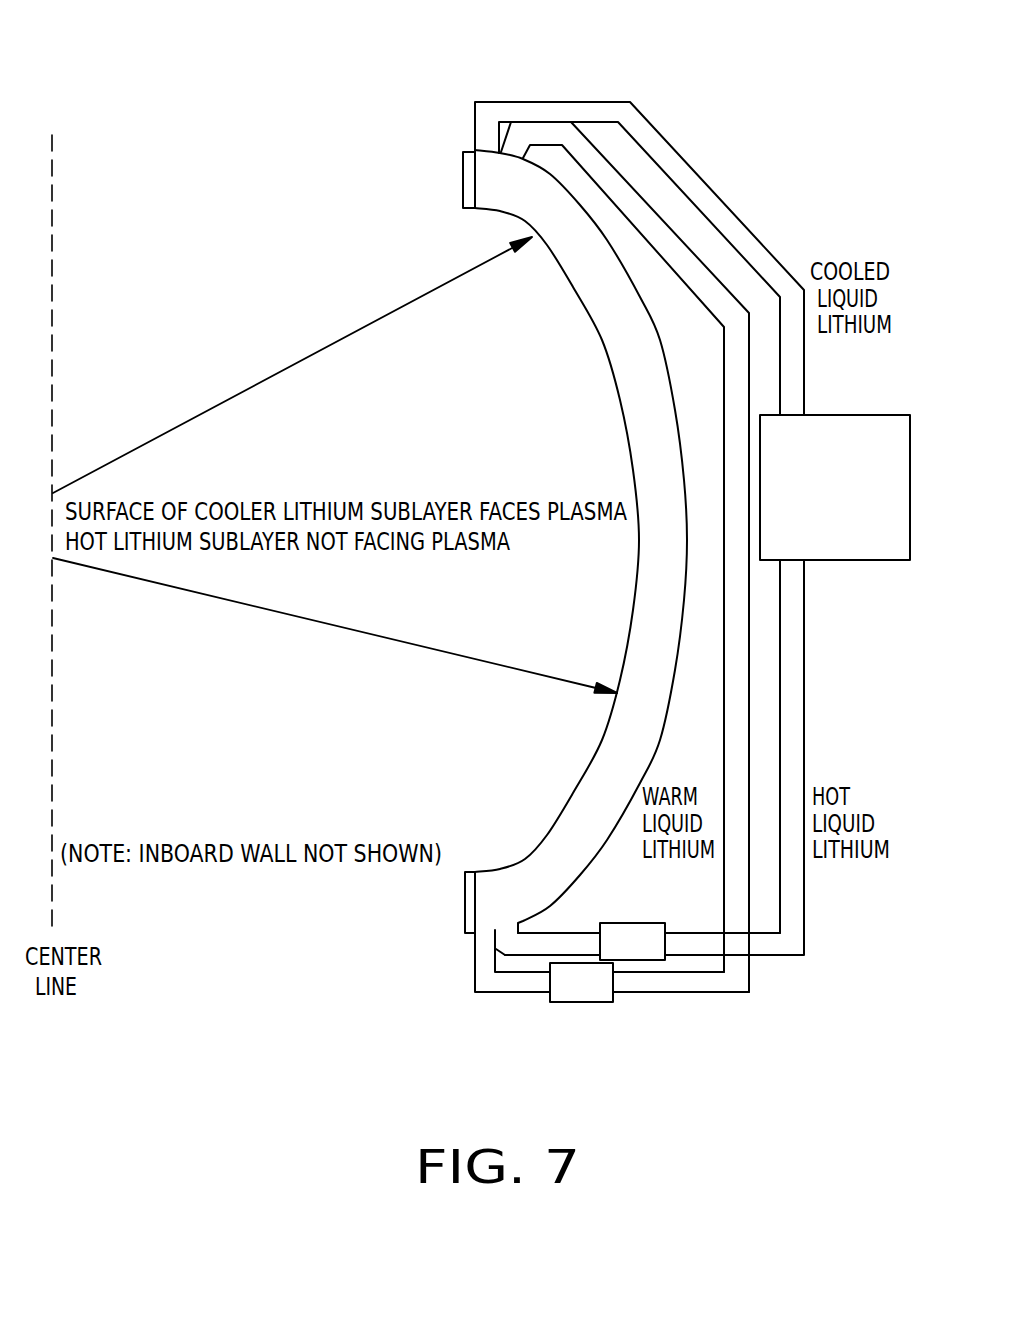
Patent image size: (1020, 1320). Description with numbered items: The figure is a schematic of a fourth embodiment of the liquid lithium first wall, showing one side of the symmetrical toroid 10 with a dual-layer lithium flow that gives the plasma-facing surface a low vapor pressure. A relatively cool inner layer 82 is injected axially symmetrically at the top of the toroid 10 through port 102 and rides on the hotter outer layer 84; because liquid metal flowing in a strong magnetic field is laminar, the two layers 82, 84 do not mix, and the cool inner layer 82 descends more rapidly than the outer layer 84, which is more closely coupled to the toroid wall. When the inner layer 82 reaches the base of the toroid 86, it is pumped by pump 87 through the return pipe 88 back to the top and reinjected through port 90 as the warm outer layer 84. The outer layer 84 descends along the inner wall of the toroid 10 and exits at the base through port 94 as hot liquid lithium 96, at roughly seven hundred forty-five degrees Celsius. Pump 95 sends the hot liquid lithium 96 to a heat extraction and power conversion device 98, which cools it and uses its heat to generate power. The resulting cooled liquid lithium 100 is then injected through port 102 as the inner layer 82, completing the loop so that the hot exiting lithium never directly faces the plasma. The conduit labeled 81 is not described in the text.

The toroid 10 is at (667, 700).
The hot liquid lithium channel 81 is at (752, 746).
The inner layer 82 is at (512, 213).
The outer layer 84 is at (658, 372).
The base of the toroid 86 is at (483, 960).
The pump 87 is at (583, 1002).
The return pipe 88 is at (703, 992).
The port 90 is at (528, 132).
The port 94 is at (557, 945).
The pump 95 is at (638, 920).
The hot liquid lithium 96 is at (695, 932).
The heat extraction and power conversion device 98 is at (883, 433).
The cooled liquid lithium 100 is at (715, 190).
The port 102 is at (485, 137).